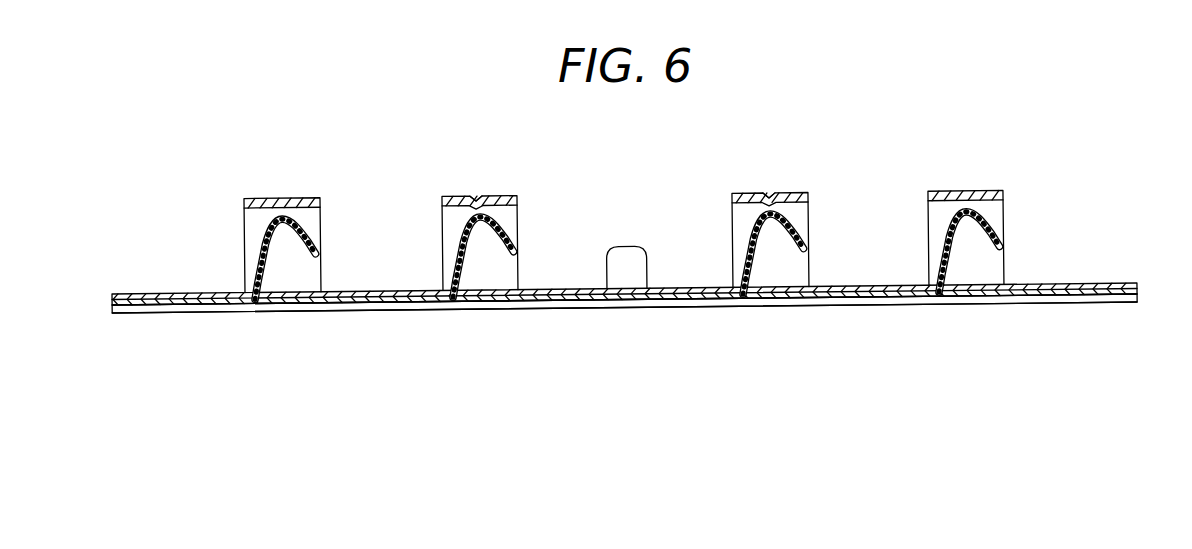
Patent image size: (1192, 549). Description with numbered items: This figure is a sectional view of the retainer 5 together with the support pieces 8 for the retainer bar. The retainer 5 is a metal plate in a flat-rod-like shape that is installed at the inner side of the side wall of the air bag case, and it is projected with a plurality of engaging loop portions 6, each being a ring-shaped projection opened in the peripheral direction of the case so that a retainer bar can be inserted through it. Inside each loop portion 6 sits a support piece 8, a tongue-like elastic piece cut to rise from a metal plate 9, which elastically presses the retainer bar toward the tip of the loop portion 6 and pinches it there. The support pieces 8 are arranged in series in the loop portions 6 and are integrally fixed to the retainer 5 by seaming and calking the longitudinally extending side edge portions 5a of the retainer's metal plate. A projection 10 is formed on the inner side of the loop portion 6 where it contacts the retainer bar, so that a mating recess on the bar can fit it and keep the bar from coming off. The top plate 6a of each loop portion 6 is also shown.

The retainer 5 is at (130, 293).
The side edge portions 5a is at (128, 309).
The engaging loop portion 6 is at (257, 222).
The top plate of housing block 6a is at (297, 201).
The support piece for retainer bar 8 is at (302, 235).
The plate 9 is at (682, 306).
The projection 10 is at (473, 211).